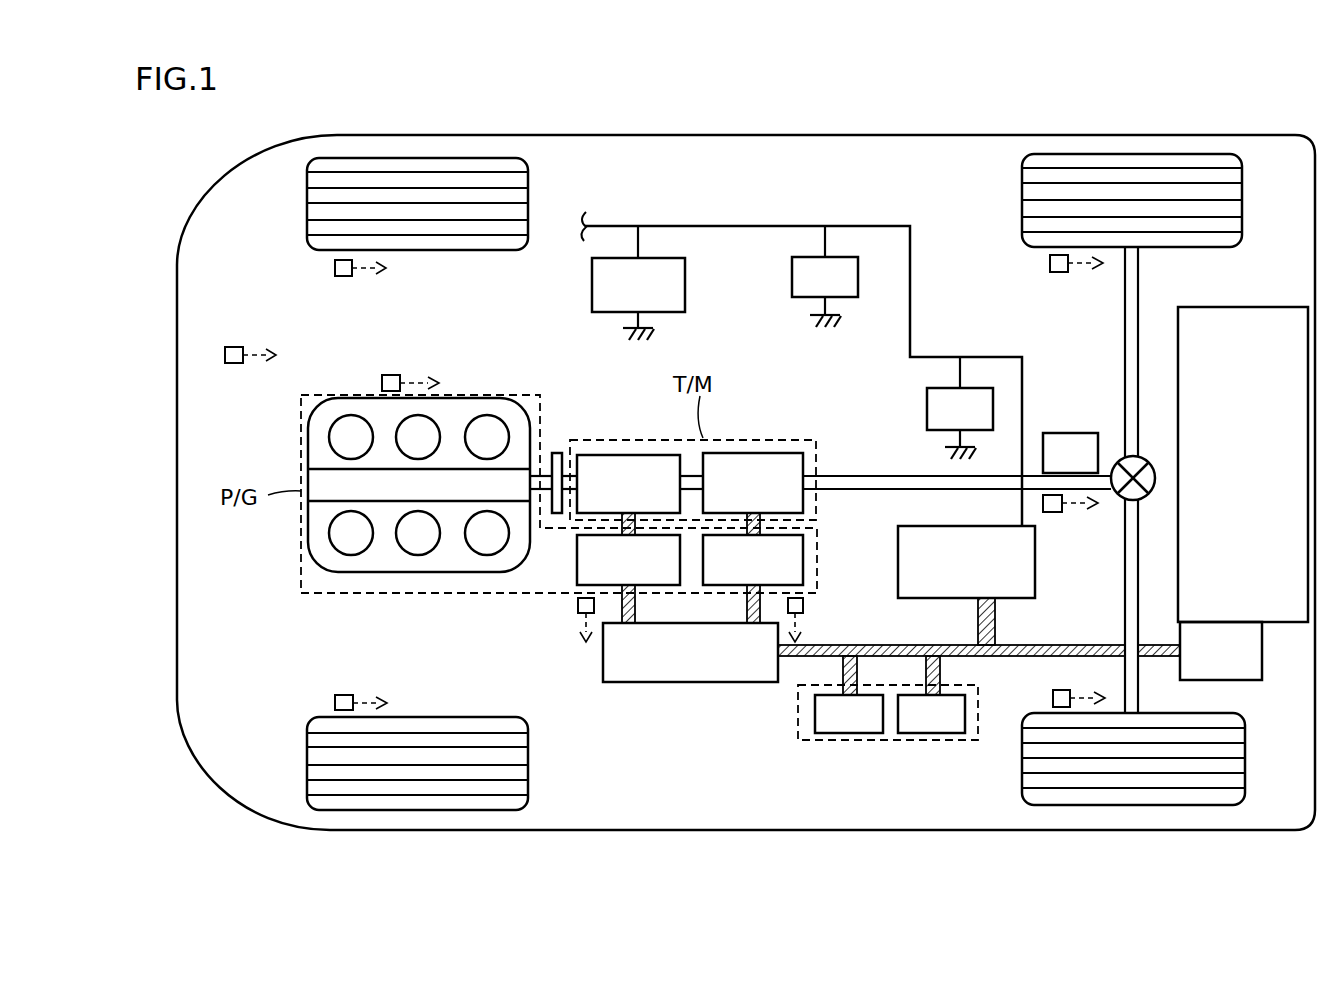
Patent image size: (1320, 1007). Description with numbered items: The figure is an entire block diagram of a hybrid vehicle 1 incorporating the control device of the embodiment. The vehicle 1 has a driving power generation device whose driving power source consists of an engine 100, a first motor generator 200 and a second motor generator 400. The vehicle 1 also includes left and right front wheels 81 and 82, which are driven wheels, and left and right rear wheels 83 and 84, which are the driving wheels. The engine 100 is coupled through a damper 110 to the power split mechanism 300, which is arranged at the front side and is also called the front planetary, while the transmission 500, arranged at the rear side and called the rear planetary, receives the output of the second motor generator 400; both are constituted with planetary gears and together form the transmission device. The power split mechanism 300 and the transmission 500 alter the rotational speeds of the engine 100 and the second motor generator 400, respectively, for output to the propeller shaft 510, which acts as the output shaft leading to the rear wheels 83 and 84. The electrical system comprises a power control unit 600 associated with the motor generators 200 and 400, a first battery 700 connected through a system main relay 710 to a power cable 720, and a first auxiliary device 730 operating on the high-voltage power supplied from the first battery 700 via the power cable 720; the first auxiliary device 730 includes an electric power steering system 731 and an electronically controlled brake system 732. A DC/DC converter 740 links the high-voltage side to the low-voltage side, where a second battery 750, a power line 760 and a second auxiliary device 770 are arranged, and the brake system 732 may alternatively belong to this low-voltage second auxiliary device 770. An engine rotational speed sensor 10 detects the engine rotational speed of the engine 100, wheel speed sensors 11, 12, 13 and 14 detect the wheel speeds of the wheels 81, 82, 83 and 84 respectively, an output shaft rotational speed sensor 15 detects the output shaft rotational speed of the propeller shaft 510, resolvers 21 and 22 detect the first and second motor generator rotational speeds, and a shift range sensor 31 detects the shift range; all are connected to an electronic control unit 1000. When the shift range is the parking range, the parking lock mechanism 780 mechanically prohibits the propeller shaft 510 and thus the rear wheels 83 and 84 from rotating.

The vehicle 1 is at (780, 101).
The engine rotational speed sensor 10 is at (390, 375).
The wheel speed sensor 11 is at (343, 276).
The wheel speed sensor 12 is at (341, 695).
The wheel speed sensor 13 is at (1050, 263).
The wheel speed sensor 14 is at (1053, 698).
The output shaft rotational speed sensor 15 is at (1052, 513).
The resolver 21 is at (578, 606).
The resolver 22 is at (803, 606).
The shift range sensor 31 is at (233, 347).
The front wheel 81 is at (528, 183).
The front wheel 82 is at (528, 765).
The rear wheel 83 is at (1022, 198).
The rear wheel 84 is at (1022, 770).
The engine 100 is at (420, 572).
The damper 110 is at (558, 445).
The first motor generator 200 is at (577, 570).
The power split mechanism 300 is at (629, 453).
The second motor generator 400 is at (805, 559).
The transmission 500 is at (753, 453).
The propeller shaft 510 is at (873, 490).
The power control unit 600 is at (690, 682).
The first battery 700 is at (1245, 307).
The system main relay 710 is at (1240, 680).
The power cable 720 is at (1056, 645).
The first auxiliary device 730 is at (890, 740).
The electric power steering system 731 is at (848, 733).
The electronically controlled brake system 732 is at (935, 733).
The DC/DC converter 740 is at (1035, 578).
The second battery 750 is at (927, 410).
The power line 760 is at (910, 322).
The second auxiliary device 770 is at (792, 277).
The parking lock mechanism 780 is at (1071, 433).
The electronic control unit 1000 is at (592, 286).